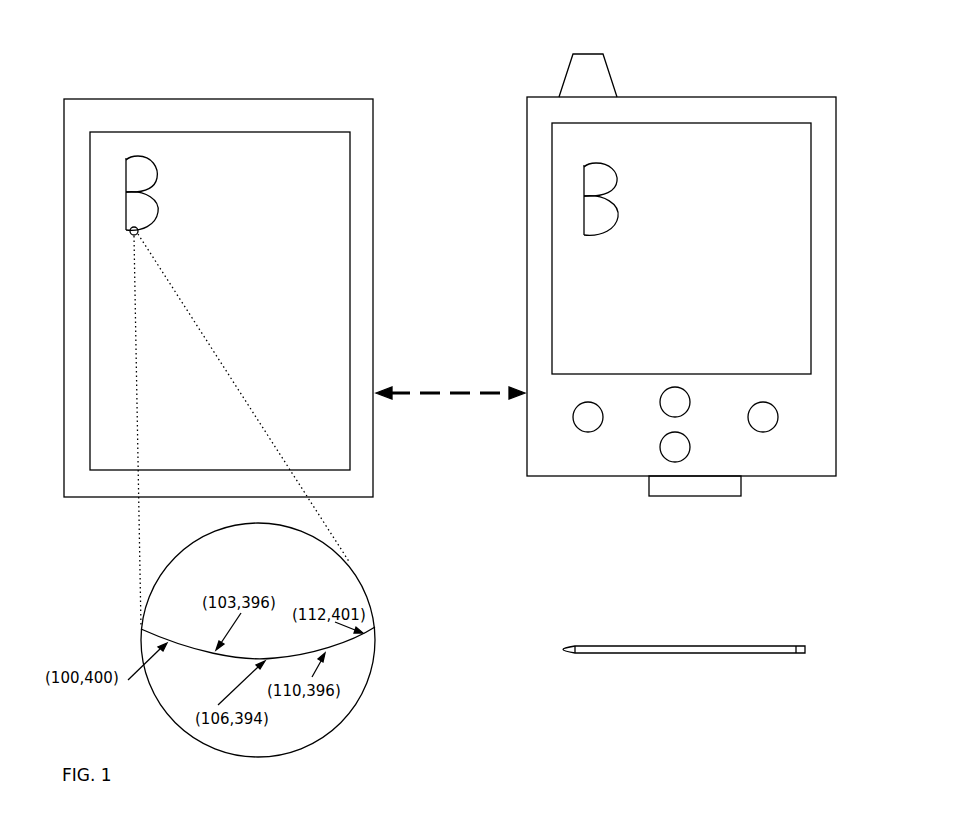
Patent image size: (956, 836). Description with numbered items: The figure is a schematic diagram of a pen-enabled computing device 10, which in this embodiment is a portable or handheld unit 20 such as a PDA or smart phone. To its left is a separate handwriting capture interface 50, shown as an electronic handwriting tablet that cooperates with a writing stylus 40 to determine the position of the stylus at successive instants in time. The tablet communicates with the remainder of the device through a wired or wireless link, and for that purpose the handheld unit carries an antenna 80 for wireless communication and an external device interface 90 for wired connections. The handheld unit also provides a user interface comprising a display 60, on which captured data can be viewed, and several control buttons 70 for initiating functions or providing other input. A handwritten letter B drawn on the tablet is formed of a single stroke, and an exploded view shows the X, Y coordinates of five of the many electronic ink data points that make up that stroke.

The pen-enabled computing device 10 is at (460, 46).
The handheld device 20 is at (837, 113).
The writing stylus 40 is at (776, 644).
The handwriting capture interface 50 is at (374, 178).
The display 60 is at (662, 123).
The control buttons 70 is at (690, 447).
The antenna 80 is at (606, 67).
The external device interface 90 is at (737, 496).